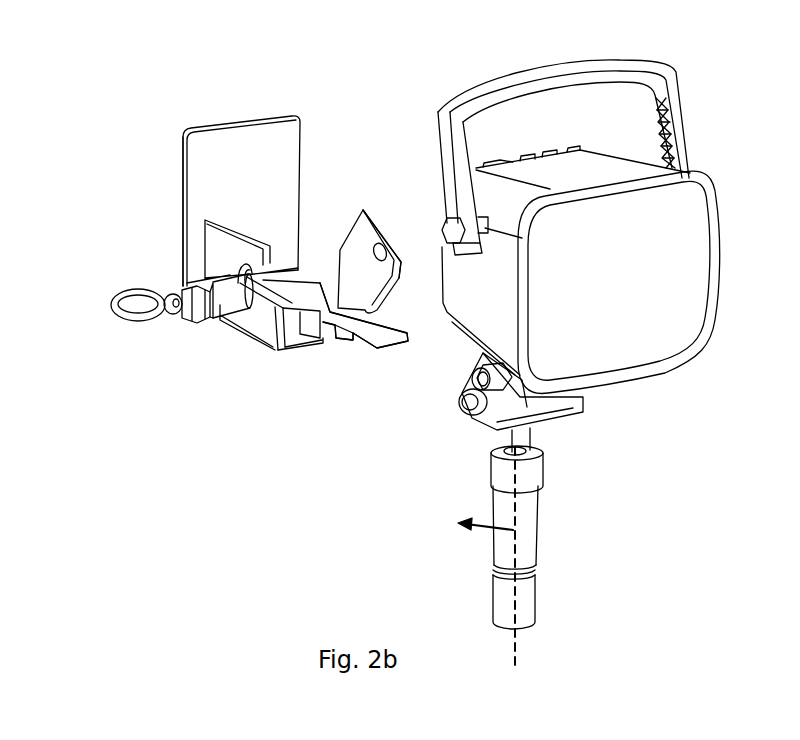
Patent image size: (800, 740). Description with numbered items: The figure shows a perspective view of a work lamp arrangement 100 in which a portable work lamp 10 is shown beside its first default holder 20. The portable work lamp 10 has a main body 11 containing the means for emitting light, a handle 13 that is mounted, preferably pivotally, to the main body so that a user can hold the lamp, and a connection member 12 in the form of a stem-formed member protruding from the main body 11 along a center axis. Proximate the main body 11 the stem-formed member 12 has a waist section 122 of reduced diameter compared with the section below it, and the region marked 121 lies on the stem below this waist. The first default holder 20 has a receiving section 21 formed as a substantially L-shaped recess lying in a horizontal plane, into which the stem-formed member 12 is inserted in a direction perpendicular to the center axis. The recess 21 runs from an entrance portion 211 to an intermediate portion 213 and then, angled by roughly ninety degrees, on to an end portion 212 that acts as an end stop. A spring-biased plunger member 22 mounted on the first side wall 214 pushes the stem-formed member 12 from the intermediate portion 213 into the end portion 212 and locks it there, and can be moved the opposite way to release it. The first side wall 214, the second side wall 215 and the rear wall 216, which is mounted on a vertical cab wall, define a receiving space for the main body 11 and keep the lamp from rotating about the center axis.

The work lamp arrangement 100 is at (136, 131).
The first default holder 20 is at (240, 118).
The rear wall 216 is at (185, 195).
The spring-biased plunger member 22 is at (113, 318).
The first side wall 214 is at (253, 312).
The intermediate portion 213 is at (302, 313).
The receiving section 21 is at (340, 343).
The entrance portion 211 is at (364, 315).
The end portion 212 is at (317, 305).
The second side wall 215 is at (390, 232).
The handle 13 is at (532, 69).
The main body 11 is at (700, 360).
The portable work lamp 10 is at (682, 205).
The waist section 122 is at (528, 445).
The connection member 12 is at (537, 520).
The ring groove 121 is at (530, 568).